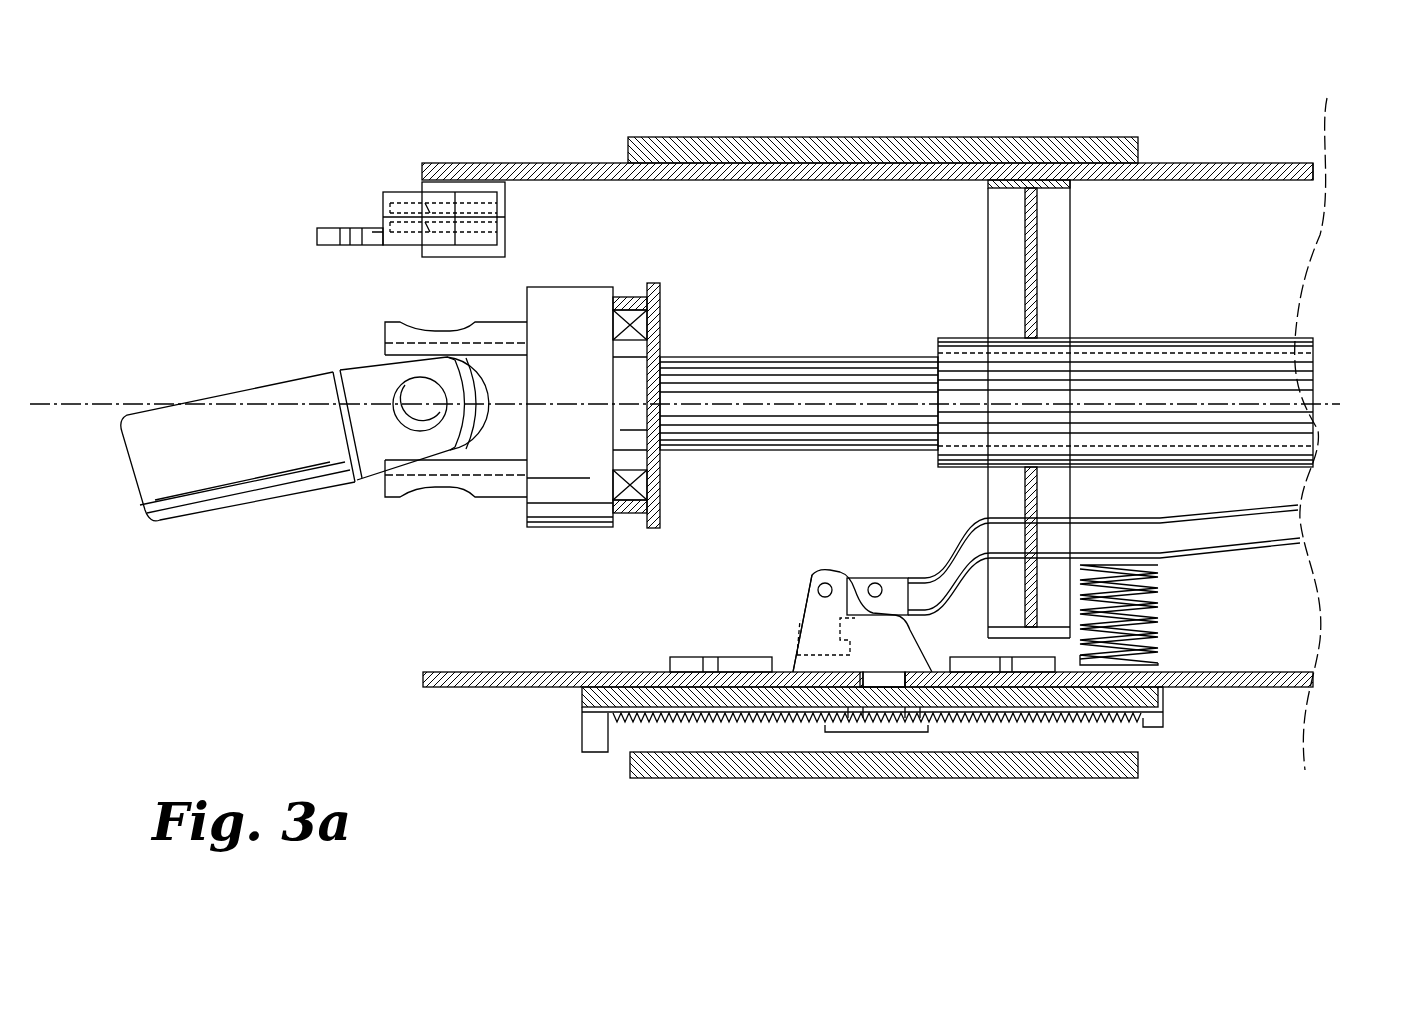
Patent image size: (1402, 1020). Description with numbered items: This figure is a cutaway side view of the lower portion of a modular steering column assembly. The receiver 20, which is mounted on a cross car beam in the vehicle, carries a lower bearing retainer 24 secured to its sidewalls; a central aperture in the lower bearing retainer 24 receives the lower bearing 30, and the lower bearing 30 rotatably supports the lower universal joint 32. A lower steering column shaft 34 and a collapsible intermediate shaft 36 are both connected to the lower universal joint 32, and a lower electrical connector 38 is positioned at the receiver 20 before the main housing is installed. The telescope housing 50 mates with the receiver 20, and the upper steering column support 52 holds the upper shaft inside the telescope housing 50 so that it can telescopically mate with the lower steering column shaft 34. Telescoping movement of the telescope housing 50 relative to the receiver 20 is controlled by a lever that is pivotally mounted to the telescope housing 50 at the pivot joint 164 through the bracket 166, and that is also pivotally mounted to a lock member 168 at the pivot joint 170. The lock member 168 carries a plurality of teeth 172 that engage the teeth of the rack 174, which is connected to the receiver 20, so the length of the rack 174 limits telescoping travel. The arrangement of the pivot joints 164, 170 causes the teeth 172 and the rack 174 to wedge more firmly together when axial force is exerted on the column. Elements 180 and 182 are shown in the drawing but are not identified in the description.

The receiver 20 is at (767, 137).
The lower bearing retainer 24 is at (635, 515).
The lower bearing 30 is at (617, 490).
The lower universal joint 32 is at (487, 497).
The lower steering column shaft 34 is at (783, 357).
The collapsible intermediate shaft 36 is at (192, 400).
The lower electrical connector 38 is at (395, 192).
The telescope housing 50 is at (1195, 163).
The upper steering column support 52 is at (1037, 215).
The pivot joint 164 is at (825, 583).
The bracket 166 is at (805, 603).
The lock member 168 is at (912, 620).
The pivot joint 170 is at (873, 583).
The teeth 172 is at (887, 725).
The rack 174 is at (582, 732).
The stop 180 is at (1162, 718).
The spring 182 is at (1160, 622).